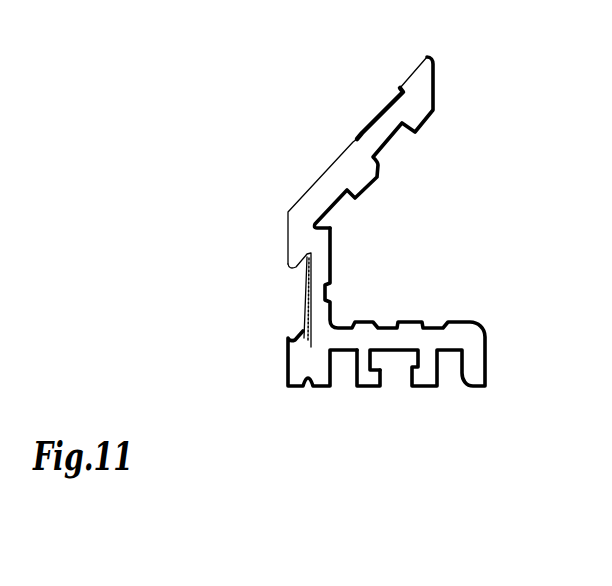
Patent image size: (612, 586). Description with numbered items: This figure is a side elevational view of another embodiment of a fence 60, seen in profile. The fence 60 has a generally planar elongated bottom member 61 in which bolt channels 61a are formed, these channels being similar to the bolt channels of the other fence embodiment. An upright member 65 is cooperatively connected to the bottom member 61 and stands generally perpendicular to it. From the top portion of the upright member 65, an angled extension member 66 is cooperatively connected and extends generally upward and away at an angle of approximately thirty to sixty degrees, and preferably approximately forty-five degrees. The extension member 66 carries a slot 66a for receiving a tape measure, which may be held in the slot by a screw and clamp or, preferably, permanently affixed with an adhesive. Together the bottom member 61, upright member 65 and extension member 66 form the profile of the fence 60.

The fence 60 is at (480, 193).
The bottom member 61 is at (427, 320).
The bolt channels 61a is at (380, 382).
The upright member 65 is at (312, 245).
The angled extension member 66 is at (345, 155).
The slot 66a is at (363, 133).